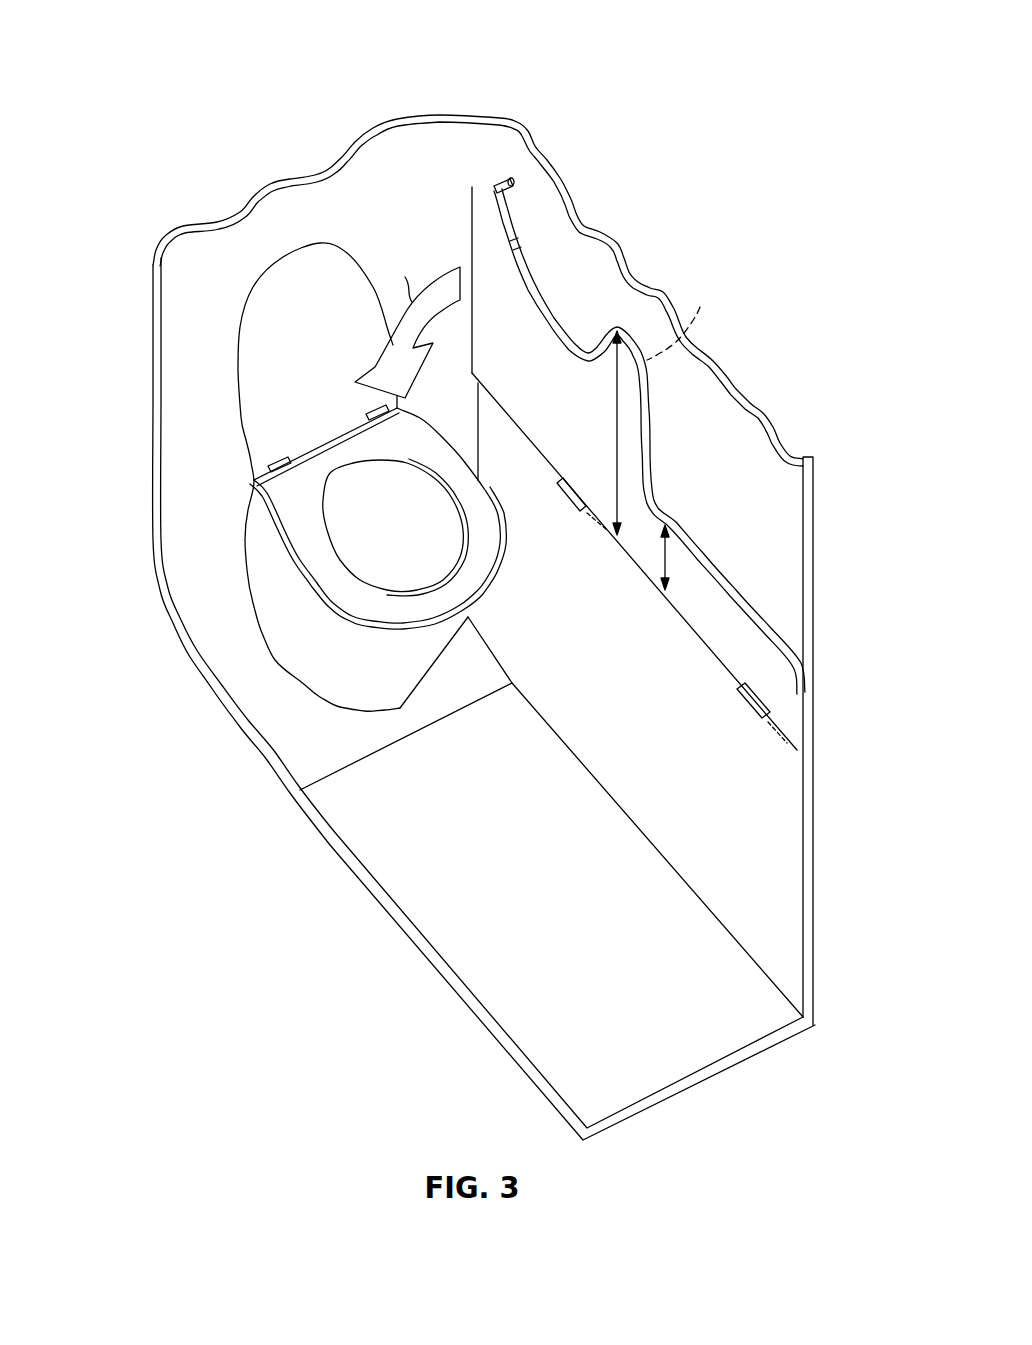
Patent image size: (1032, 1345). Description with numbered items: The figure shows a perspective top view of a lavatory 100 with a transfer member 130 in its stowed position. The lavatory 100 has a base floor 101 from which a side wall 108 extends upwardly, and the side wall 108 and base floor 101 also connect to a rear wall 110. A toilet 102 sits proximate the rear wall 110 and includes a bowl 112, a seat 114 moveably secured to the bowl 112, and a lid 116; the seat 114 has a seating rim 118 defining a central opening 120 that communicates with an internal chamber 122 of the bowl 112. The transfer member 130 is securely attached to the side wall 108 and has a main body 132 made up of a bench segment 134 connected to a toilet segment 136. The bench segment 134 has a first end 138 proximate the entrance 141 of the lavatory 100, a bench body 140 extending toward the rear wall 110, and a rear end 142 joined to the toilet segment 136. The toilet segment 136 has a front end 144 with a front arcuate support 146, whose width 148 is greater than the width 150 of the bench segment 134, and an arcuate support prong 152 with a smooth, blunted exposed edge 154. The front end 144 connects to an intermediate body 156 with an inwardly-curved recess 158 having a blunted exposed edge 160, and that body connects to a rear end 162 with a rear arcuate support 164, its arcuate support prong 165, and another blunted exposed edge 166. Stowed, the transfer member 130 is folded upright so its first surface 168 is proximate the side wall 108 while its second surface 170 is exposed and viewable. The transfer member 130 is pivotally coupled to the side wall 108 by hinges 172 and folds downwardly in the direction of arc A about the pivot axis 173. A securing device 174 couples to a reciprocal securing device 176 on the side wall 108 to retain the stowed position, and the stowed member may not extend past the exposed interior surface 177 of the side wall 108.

The lavatory 100 is at (141, 221).
The base floor 101 is at (565, 1045).
The toilet 102 is at (263, 552).
The side wall 108 is at (773, 823).
The rear wall 110 is at (197, 362).
The bowl 112 is at (300, 638).
The seat 114 is at (397, 608).
The lid 116 is at (314, 248).
The seating rim 118 is at (483, 560).
The central opening 120 is at (373, 497).
The internal chamber 122 is at (390, 571).
The transfer member 130 is at (681, 489).
The main body 132 is at (627, 417).
The bench segment 134 is at (690, 597).
The toilet segment 136 is at (578, 357).
The first end 138 is at (797, 717).
The bench body 140 is at (703, 588).
The entrance 141 is at (771, 954).
The rear end 142 is at (637, 505).
The front end 144 is at (634, 535).
The front arcuate support 146 is at (625, 350).
The width 148 is at (617, 408).
The width 150 is at (668, 557).
The arcuate support prong 152 is at (637, 333).
The exposed edge 154 is at (632, 273).
The intermediate body 156 is at (551, 433).
The recess 158 is at (528, 282).
The exposed edge 160 is at (527, 358).
The rear end 162 is at (497, 182).
The rear arcuate support 164 is at (510, 195).
The arcuate support prong 165 is at (480, 198).
The exposed edge 166 is at (505, 180).
The first surface 168 is at (700, 307).
The second surface 170 is at (523, 410).
The hinges 172 is at (575, 510).
The pivot axis 173 is at (599, 537).
The securing device 174 is at (490, 190).
The reciprocal securing device 176 is at (517, 175).
The exposed interior surface 177 is at (783, 490).